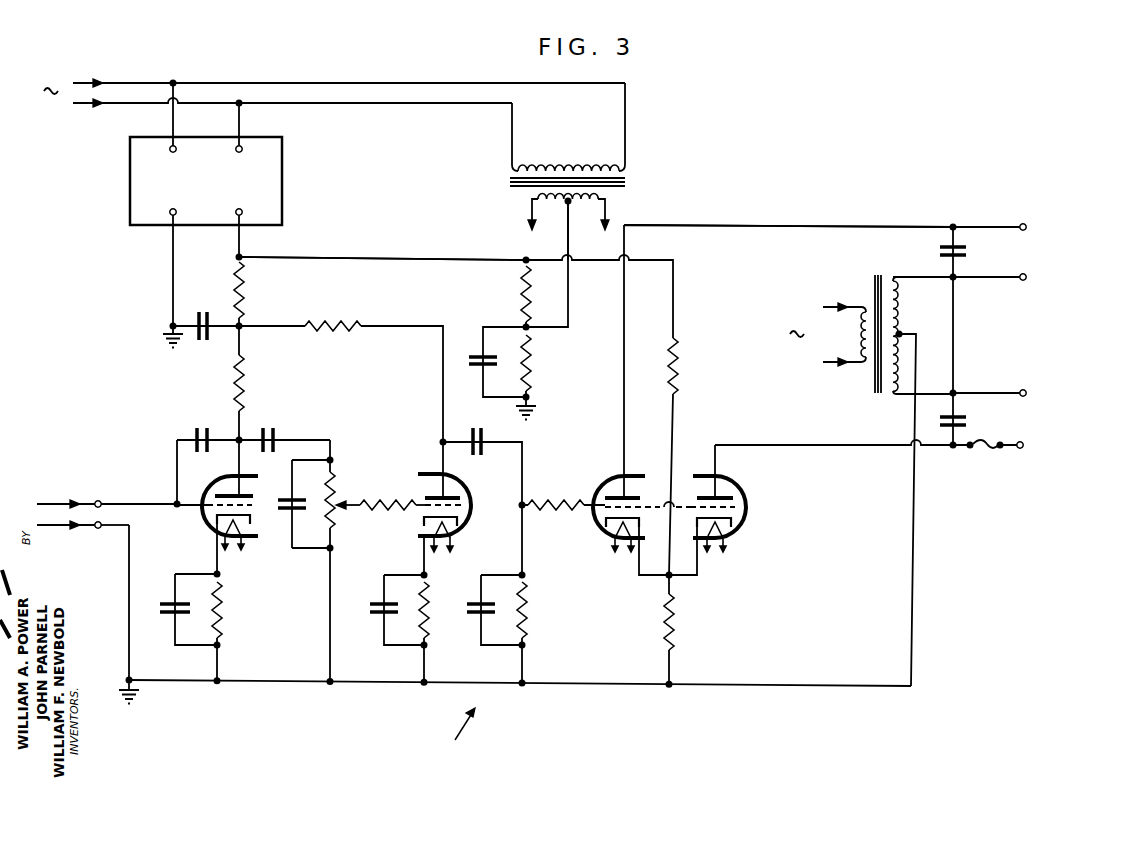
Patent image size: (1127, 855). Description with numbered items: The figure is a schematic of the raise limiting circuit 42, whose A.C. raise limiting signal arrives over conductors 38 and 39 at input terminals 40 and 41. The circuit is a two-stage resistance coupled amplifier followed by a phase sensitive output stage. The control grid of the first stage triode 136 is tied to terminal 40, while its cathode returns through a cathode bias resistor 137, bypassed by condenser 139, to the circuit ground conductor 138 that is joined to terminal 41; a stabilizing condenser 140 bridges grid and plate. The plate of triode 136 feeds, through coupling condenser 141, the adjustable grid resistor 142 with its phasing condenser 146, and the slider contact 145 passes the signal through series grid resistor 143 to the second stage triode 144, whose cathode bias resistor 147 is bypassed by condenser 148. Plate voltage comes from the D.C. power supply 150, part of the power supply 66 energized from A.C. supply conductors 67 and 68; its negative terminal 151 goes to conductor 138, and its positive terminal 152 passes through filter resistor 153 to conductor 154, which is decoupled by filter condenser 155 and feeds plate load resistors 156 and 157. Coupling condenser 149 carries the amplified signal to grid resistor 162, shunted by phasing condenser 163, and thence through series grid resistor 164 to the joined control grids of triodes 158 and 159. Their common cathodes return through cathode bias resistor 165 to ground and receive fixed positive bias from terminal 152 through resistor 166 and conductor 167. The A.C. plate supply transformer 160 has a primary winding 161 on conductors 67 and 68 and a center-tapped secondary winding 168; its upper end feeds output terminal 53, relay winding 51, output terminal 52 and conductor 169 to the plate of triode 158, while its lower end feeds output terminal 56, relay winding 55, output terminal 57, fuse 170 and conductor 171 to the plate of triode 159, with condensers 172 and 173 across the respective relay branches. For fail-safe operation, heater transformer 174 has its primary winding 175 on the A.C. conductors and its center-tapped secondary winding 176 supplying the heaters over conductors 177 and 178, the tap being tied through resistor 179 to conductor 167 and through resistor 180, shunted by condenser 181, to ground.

The conductor 38 is at (60, 502).
The conductor 39 is at (62, 528).
The input terminal 40 is at (101, 502).
The input terminal 41 is at (99, 528).
The raise limiting circuit 42 is at (451, 743).
The relay winding 51 is at (1078, 261).
The output terminal 52 is at (1026, 224).
The output terminal 53 is at (1026, 280).
The relay winding 55 is at (1078, 429).
The output terminal 56 is at (1026, 390).
The output terminal 57 is at (1022, 449).
The power supply 66 is at (851, 211).
The A.C. supply conductor 67 is at (372, 105).
The A.C. supply conductor 68 is at (372, 83).
The first stage amplifier triode electron tube 136 is at (218, 478).
The cathode bias resistor 137 is at (220, 612).
The circuit ground conductor 138 is at (170, 286).
The cathode bypass condenser 139 is at (158, 605).
The stabilizing condenser 140 is at (202, 424).
The coupling condenser 141 is at (271, 426).
The grid resistor 142 is at (336, 525).
The series grid resistor 143 is at (390, 494).
The second stage amplifier triode 144 is at (465, 482).
The adjustable slider contact 145 is at (340, 503).
The phasing condenser 146 is at (272, 511).
The cathode bias resistor 147 is at (426, 622).
The cathode bypass condenser 148 is at (364, 606).
The coupling condenser 149 is at (481, 424).
The D.C. power supply 150 is at (147, 155).
The negative output terminal 151 is at (170, 203).
The positive terminal 152 is at (245, 195).
The filter resistor 153 is at (244, 292).
The conductor 154 is at (264, 329).
The filter condenser 155 is at (203, 310).
The plate load resistor 156 is at (232, 381).
The plate load resistor 157 is at (336, 322).
The triode electron tube 158 is at (612, 478).
The triode electron tube 159 is at (738, 488).
The A.C. plate supply transformer 160 is at (876, 275).
The primary winding 161 is at (860, 334).
The grid resistor 162 is at (527, 612).
The phasing condenser 163 is at (462, 606).
The series grid resistor 164 is at (567, 519).
The cathode bias resistor 165 is at (671, 613).
The resistor 166 is at (677, 364).
The conductor 167 is at (396, 258).
The center-tapped secondary winding 168 is at (897, 310).
The conductor 169 is at (790, 228).
The fuse 170 is at (987, 449).
The conductor 171 is at (803, 443).
The condenser 172 is at (957, 251).
The condenser 173 is at (957, 421).
The transformer 174 is at (496, 182).
The primary winding 175 is at (573, 166).
The center-tapped secondary winding 176 is at (588, 202).
The conductor 177 is at (532, 212).
The conductor 178 is at (606, 212).
The resistor 179 is at (518, 292).
The resistor 180 is at (530, 354).
The condenser 181 is at (458, 358).